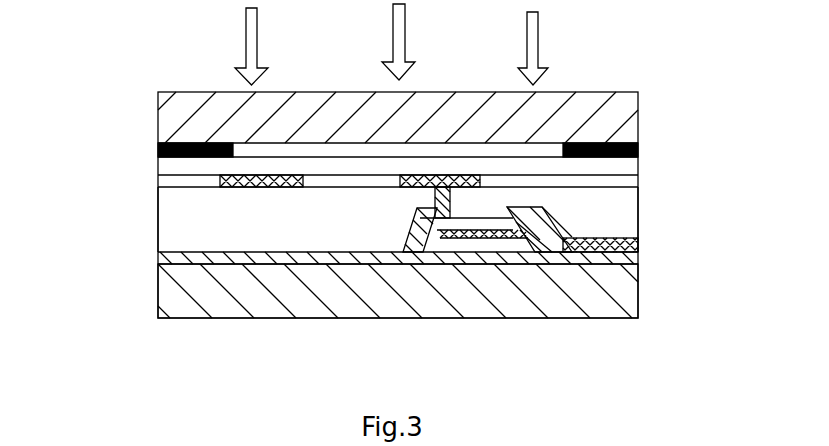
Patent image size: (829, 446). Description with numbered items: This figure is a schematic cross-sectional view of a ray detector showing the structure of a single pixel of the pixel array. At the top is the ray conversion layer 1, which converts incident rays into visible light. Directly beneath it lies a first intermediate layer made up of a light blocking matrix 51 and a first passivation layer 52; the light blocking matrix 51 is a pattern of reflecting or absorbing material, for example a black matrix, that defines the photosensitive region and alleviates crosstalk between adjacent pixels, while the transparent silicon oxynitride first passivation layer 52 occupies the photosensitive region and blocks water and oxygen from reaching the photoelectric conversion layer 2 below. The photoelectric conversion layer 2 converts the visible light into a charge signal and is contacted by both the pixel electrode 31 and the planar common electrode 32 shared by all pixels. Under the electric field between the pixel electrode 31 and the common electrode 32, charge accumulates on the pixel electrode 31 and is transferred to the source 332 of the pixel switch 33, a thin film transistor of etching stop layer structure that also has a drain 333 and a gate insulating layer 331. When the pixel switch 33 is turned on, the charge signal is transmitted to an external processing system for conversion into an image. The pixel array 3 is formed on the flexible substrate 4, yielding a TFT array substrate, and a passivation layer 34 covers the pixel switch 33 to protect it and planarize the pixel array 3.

The ray conversion layer 1 is at (638, 118).
The photoelectric conversion layer 2 is at (638, 160).
The pixel array 3 is at (638, 227).
The flexible substrate 4 is at (638, 290).
The pixel electrode 31 is at (600, 175).
The common electrode 32 is at (220, 178).
The pixel switch 33 is at (477, 245).
The passivation layer 34 is at (187, 225).
The light blocking matrix 51 is at (158, 152).
The first passivation layer 52 is at (322, 147).
The gate insulating layer 331 is at (160, 263).
The source 332 is at (413, 220).
The drain 333 is at (638, 238).